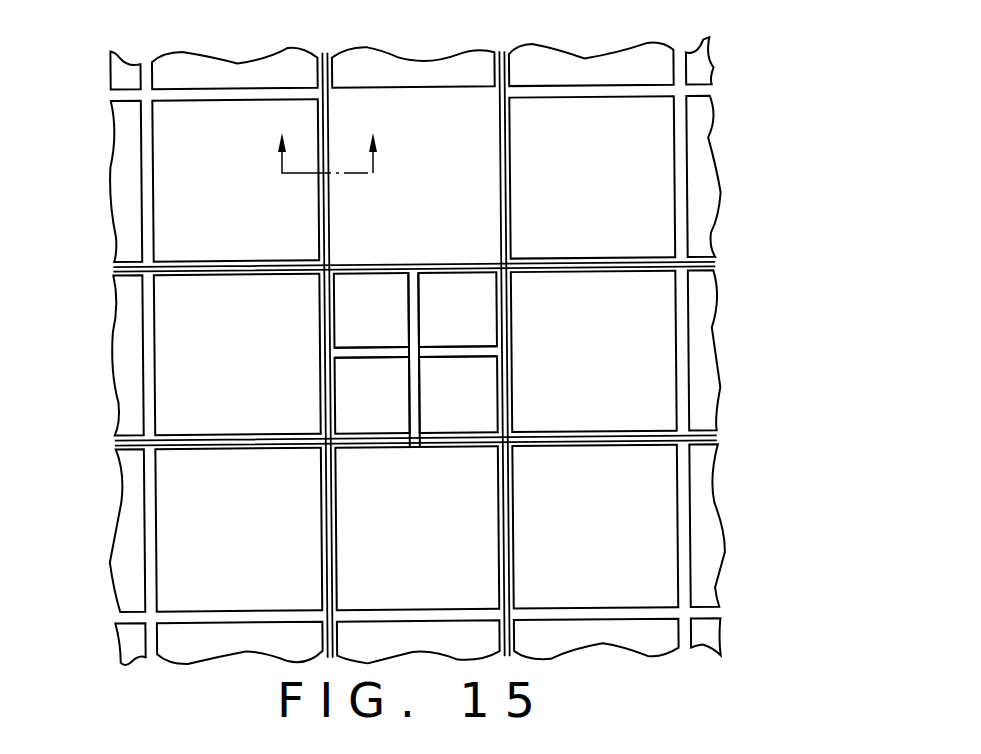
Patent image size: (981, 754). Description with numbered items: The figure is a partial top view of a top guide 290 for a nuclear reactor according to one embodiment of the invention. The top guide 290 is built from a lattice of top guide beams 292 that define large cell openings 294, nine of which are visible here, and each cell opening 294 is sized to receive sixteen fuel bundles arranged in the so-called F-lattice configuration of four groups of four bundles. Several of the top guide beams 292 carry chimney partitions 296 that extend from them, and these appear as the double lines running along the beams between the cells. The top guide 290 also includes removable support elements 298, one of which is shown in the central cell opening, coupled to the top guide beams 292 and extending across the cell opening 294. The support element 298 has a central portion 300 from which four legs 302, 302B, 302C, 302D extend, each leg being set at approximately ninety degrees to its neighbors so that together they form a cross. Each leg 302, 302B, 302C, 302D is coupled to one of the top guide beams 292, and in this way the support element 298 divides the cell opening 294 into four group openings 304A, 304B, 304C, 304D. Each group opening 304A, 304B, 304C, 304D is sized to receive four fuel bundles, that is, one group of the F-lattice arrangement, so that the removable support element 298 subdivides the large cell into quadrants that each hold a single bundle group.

The top guide 290 is at (132, 468).
The top guide beams 292 is at (211, 96).
The cell openings 294 is at (622, 98).
The chimney partitions 296 is at (507, 379).
The removable support element 298 is at (398, 384).
The central portion 300 is at (430, 346).
The leg 302 is at (373, 348).
The leg 302B is at (416, 302).
The leg 302C is at (472, 350).
The leg 302D is at (417, 413).
The group opening 304A is at (379, 437).
The group opening 304B is at (374, 280).
The group opening 304C is at (478, 273).
The group opening 304D is at (478, 437).